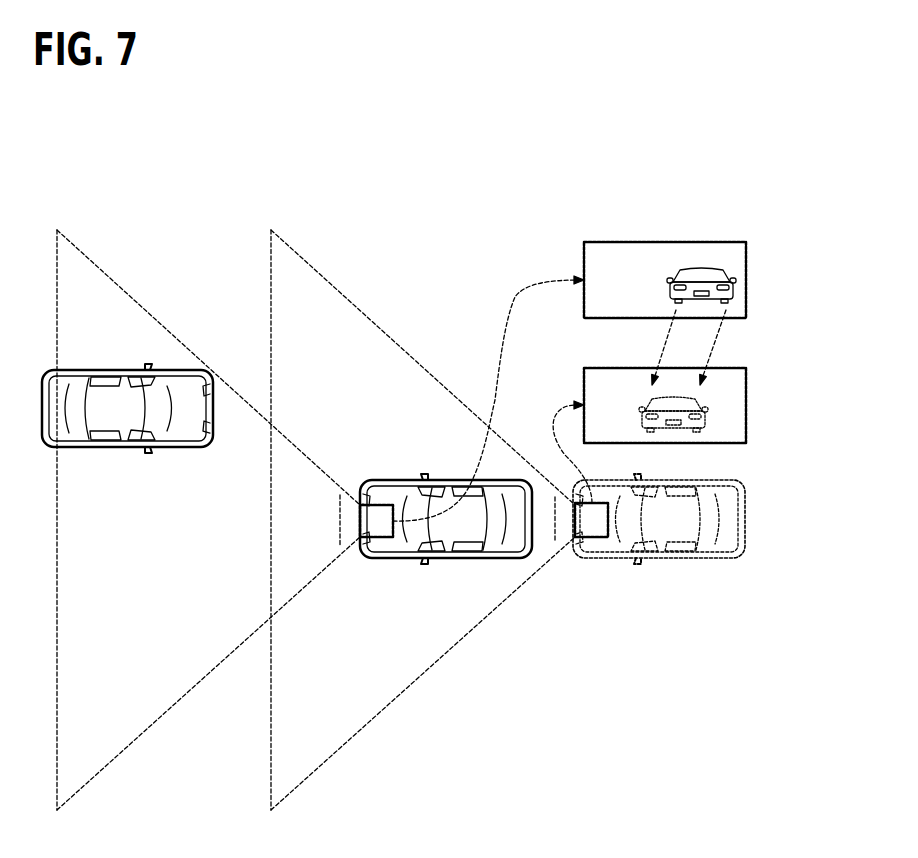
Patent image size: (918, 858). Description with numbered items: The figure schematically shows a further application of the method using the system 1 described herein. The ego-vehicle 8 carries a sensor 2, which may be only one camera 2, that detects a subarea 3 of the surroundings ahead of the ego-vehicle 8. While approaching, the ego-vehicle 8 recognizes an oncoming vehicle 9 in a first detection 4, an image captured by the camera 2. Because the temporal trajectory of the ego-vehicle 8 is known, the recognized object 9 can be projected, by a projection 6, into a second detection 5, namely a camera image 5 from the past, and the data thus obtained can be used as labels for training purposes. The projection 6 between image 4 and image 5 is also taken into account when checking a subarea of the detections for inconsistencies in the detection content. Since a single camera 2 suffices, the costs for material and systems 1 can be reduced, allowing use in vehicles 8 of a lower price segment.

The system 1 is at (506, 604).
The sensor 2 is at (380, 528).
The subarea of the surroundings 3 is at (120, 318).
The first detection 4 is at (620, 242).
The second detection 5 is at (746, 410).
The projection 6 is at (712, 338).
The ego-vehicle 8 is at (440, 538).
The oncoming vehicle 9 is at (105, 427).